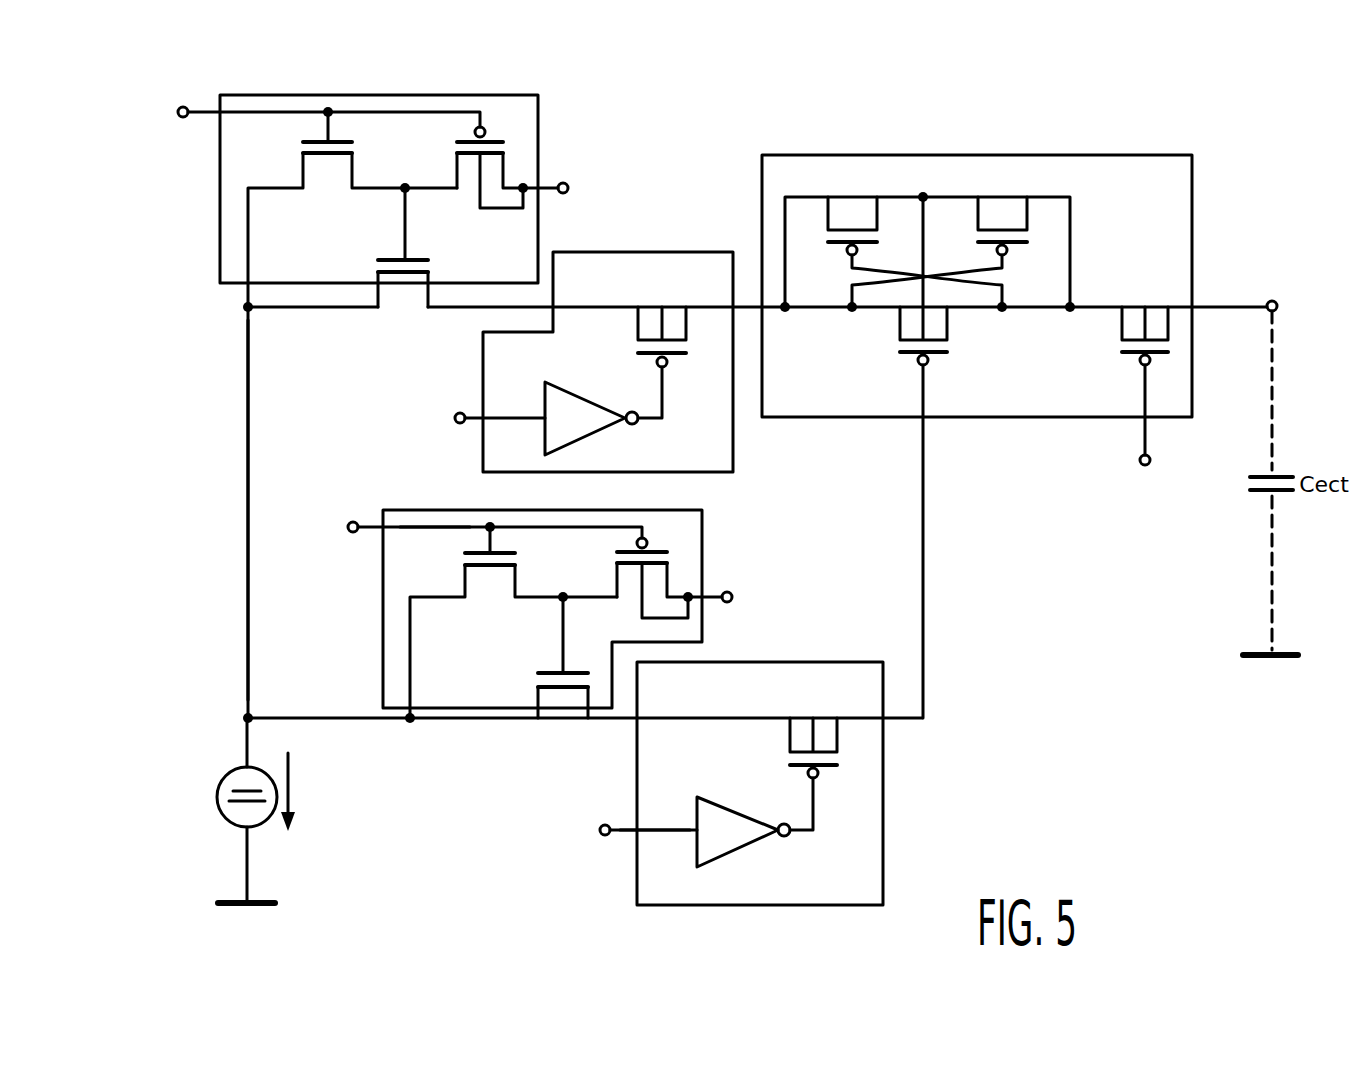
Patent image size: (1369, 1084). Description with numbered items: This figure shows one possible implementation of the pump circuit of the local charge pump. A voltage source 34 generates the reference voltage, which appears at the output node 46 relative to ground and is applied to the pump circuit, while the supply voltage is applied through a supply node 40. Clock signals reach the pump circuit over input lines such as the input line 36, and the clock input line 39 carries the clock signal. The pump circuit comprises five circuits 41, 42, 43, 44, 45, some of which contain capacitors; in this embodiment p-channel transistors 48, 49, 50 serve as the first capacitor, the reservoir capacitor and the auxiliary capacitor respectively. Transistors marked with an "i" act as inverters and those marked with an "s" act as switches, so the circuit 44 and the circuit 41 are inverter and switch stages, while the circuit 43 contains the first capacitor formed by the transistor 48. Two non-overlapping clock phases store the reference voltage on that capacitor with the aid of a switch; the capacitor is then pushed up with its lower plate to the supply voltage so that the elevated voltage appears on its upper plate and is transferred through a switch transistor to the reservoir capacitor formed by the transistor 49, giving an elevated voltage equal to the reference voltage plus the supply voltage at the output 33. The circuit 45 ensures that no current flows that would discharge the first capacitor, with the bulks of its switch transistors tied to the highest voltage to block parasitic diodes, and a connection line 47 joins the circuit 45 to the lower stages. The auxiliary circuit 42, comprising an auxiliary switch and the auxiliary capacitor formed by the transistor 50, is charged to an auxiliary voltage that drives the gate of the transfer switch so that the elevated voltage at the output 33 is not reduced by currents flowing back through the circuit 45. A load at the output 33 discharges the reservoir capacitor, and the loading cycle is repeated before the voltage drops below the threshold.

The output 33 is at (1228, 312).
The voltage source 34 is at (217, 800).
The input line 36 is at (453, 527).
The clock input line 39 is at (522, 418).
The supply node 40 is at (547, 181).
The circuit 41 is at (383, 607).
The auxiliary circuit 42 is at (760, 783).
The circuit 43 is at (614, 362).
The circuit 44 is at (220, 270).
The circuit 45 is at (977, 325).
The output node 46 is at (247, 478).
The connection line 47 is at (923, 548).
The p-channel transistor 48 is at (675, 369).
The p-channel transistor 49 is at (1108, 337).
The p-channel transistor 50 is at (768, 740).